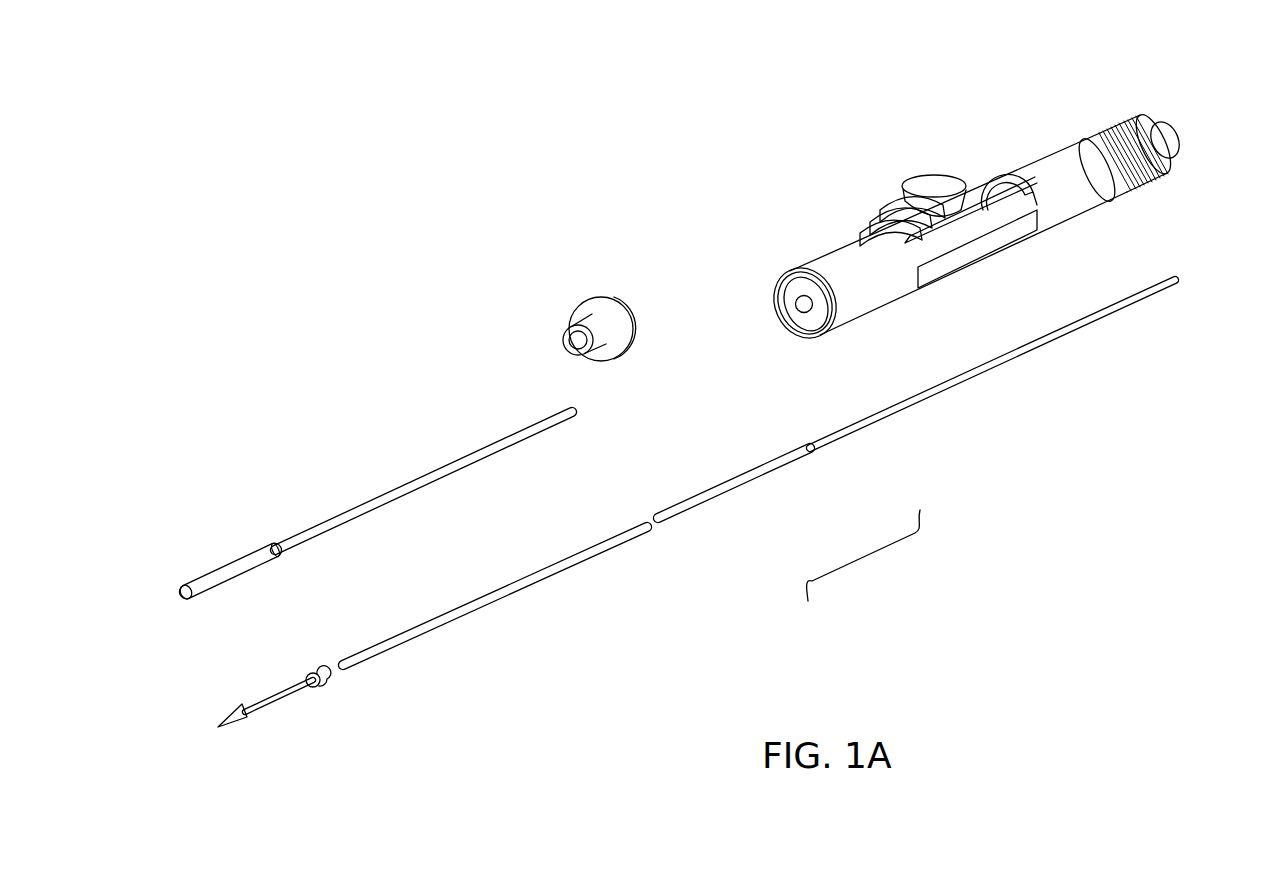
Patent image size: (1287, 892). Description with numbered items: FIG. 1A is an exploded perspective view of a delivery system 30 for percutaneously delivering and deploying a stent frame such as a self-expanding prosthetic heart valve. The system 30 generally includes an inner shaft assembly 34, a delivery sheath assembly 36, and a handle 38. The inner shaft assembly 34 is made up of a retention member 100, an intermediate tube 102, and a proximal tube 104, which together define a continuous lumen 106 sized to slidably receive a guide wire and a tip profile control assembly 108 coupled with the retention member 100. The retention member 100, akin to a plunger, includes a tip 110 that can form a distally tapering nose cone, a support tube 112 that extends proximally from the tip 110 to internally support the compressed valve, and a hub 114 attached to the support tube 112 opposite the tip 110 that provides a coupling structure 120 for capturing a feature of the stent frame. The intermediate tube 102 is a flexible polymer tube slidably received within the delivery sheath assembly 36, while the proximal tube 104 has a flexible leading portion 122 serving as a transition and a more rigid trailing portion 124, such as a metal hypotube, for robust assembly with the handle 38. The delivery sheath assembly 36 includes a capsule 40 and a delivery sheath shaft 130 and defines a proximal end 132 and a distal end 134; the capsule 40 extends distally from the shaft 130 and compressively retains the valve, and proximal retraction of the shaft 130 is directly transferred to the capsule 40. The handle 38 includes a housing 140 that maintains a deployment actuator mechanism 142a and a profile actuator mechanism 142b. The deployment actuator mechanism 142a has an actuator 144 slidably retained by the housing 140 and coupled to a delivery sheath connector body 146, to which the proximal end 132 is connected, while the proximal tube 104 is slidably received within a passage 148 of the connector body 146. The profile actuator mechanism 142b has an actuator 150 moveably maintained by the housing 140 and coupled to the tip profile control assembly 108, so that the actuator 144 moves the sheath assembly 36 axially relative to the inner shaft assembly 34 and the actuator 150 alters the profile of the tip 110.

The delivery system 30 is at (487, 263).
The inner shaft assembly 34 is at (658, 580).
The delivery sheath assembly 36 is at (222, 546).
The handle 38 is at (1028, 143).
The capsule 40 is at (231, 586).
The retention member 100 is at (290, 772).
The intermediate tube 102 is at (474, 612).
The proximal tube 104 is at (936, 428).
The lumen 106 is at (348, 676).
The tip profile control assembly 108 is at (868, 568).
The tip 110 is at (240, 730).
The support tube 112 is at (270, 706).
The hub 114 is at (310, 671).
The coupling structure 120 is at (324, 690).
The leading portion 122 is at (750, 486).
The trailing portion 124 is at (1131, 314).
The delivery sheath shaft 130 is at (394, 513).
The proximal end 132 is at (578, 413).
The distal end 134 is at (180, 596).
The housing 140 is at (845, 245).
The deployment actuator mechanism 142a is at (944, 160).
The profile actuator mechanism 142b is at (1152, 110).
The deployment actuator 144 is at (927, 186).
The delivery sheath connector body 146 is at (798, 320).
The passage 148 is at (796, 298).
The profile actuator 150 is at (1128, 122).